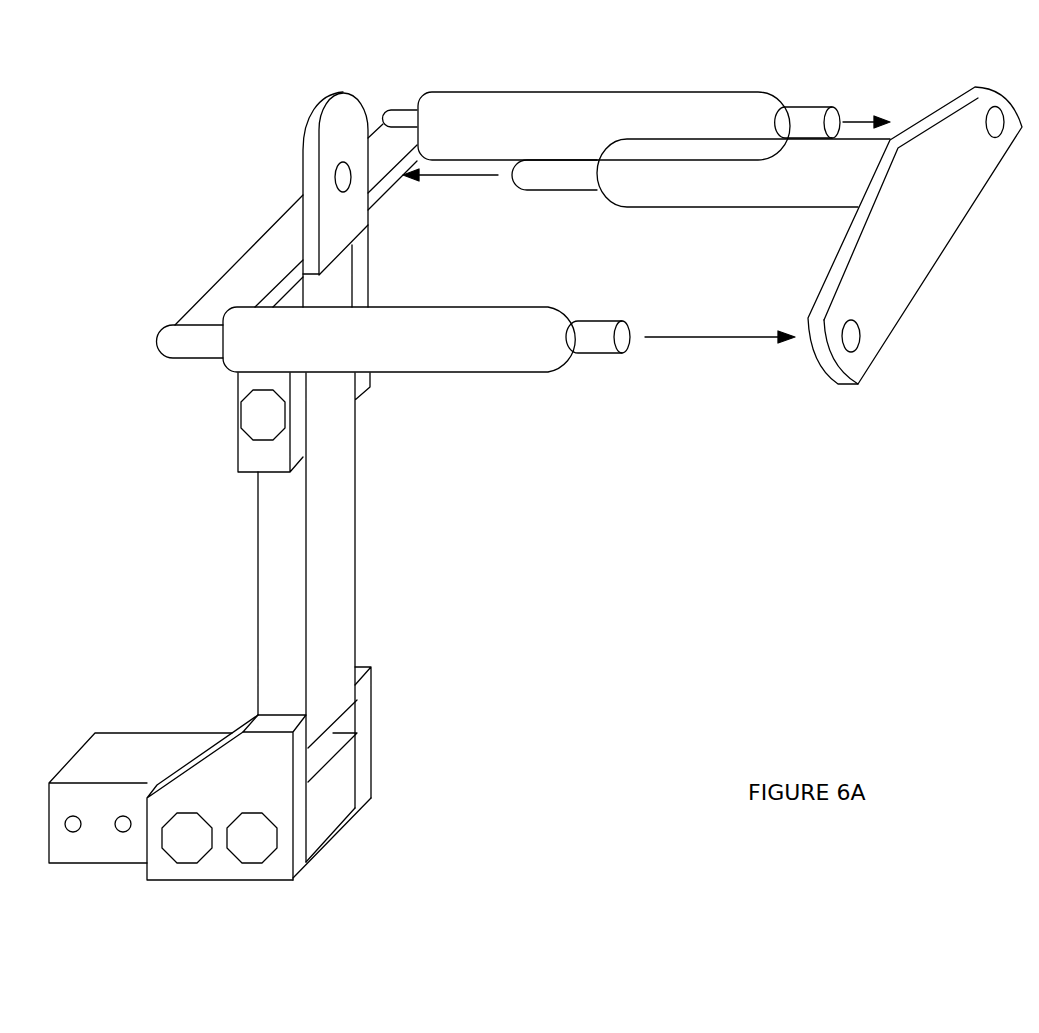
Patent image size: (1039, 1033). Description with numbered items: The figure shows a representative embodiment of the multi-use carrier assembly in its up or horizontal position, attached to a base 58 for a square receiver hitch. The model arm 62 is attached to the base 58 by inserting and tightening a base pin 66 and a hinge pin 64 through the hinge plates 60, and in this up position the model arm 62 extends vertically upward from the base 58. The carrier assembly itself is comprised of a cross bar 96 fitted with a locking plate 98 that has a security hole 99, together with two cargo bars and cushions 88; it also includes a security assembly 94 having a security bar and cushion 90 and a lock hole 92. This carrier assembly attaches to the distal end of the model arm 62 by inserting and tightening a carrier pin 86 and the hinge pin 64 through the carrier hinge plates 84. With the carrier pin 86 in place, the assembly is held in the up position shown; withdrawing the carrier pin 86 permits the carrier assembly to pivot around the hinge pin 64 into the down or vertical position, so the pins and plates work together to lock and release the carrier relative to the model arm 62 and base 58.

The base 58 is at (193, 750).
The hinge plates 60 is at (275, 765).
The model arm 62 is at (338, 567).
The hinge pin 64 is at (299, 820).
The base pin 66 is at (178, 848).
The carrier hinge plates 84 is at (255, 458).
The carrier pin 86 is at (255, 408).
The cargo bars and cushions 88 is at (612, 112).
The security bar and cushion 90 is at (677, 190).
The lock hole 92 is at (547, 173).
The security assembly 94 is at (955, 187).
The cross bar 96 is at (270, 258).
The locking plate 98 is at (345, 199).
The security hole 99 is at (350, 183).